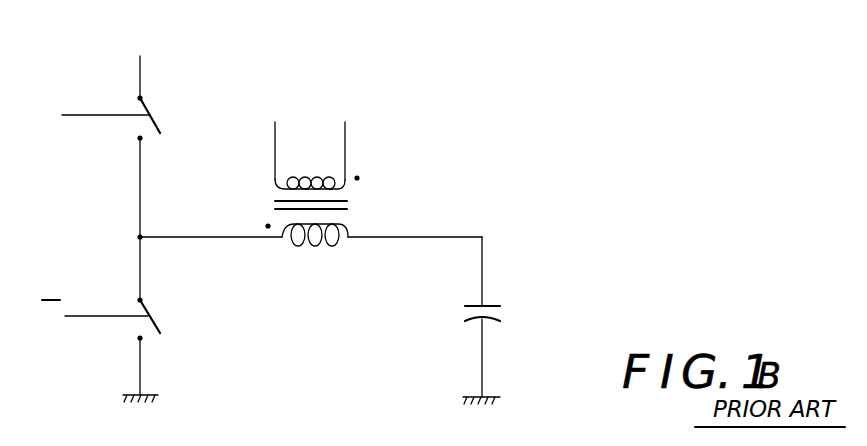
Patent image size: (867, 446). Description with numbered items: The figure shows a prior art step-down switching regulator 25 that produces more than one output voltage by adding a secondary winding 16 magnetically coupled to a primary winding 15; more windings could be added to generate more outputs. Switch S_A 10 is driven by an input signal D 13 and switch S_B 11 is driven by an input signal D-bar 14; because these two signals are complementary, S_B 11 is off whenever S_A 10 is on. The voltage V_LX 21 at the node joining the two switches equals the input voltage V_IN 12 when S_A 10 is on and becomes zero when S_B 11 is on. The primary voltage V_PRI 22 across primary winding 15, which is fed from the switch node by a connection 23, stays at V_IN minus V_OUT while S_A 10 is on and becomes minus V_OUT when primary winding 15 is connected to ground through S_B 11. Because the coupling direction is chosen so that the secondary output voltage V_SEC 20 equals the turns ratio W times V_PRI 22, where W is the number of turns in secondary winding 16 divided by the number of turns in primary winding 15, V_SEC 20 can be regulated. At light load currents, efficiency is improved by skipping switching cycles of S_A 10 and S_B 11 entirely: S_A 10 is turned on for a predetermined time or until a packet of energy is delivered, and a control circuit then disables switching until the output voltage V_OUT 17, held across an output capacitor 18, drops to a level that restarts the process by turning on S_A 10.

The switch S_A 10 is at (157, 110).
The switch S_B 11 is at (156, 313).
The input voltage node V_IN 12 is at (187, 39).
The input signal D 13 is at (47, 124).
The input signal D-bar 14 is at (65, 327).
The primary winding 15 is at (332, 241).
The secondary winding 16 is at (313, 170).
The output voltage V_OUT 17 is at (526, 224).
The output capacitor 18 is at (504, 313).
The secondary output voltage V_SEC 20 is at (330, 87).
The switching node voltage V_LX 21 is at (88, 229).
The primary voltage V_PRI 22 is at (305, 283).
The primary winding first terminal wire 23 is at (252, 238).
The step-down switching regulator 25 is at (393, 239).